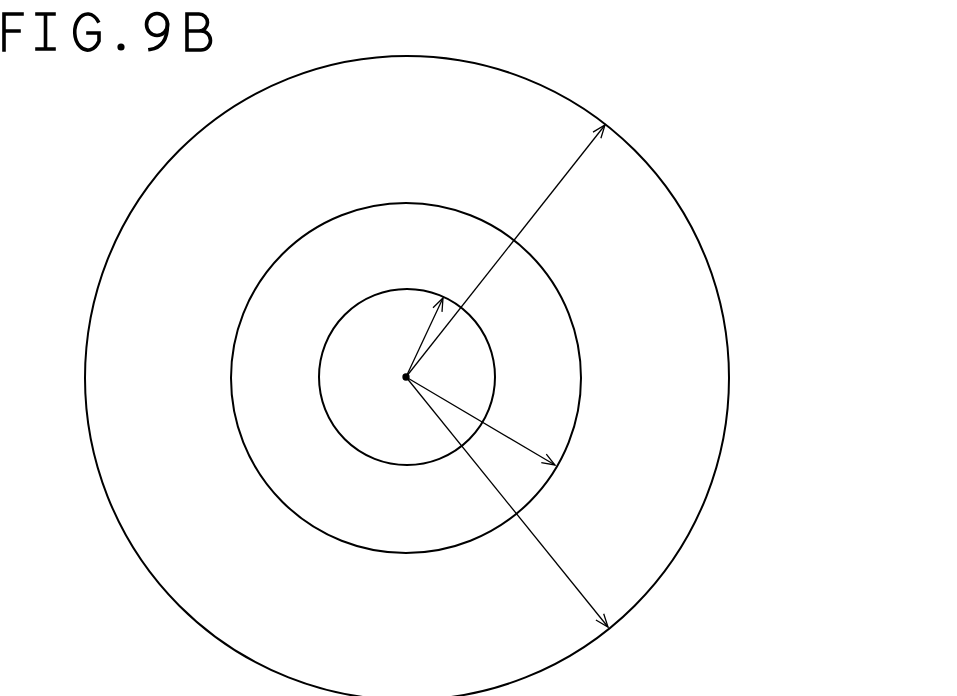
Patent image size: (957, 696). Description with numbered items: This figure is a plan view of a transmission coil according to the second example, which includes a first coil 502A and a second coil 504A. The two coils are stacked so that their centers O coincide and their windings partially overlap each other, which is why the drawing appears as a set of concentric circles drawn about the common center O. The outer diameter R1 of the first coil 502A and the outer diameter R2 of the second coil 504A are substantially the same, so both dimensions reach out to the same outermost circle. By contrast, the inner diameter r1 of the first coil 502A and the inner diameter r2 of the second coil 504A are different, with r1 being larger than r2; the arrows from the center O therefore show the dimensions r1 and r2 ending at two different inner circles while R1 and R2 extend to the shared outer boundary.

The second coil 504A is at (678, 252).
The first coil 502A is at (550, 390).
The center O is at (395, 387).
The inner diameter of the first coil r1 is at (421, 337).
The outer diameter of the first coil R1 is at (505, 251).
The inner diameter of the second coil r2 is at (480, 421).
The outer diameter of the second coil R2 is at (507, 502).